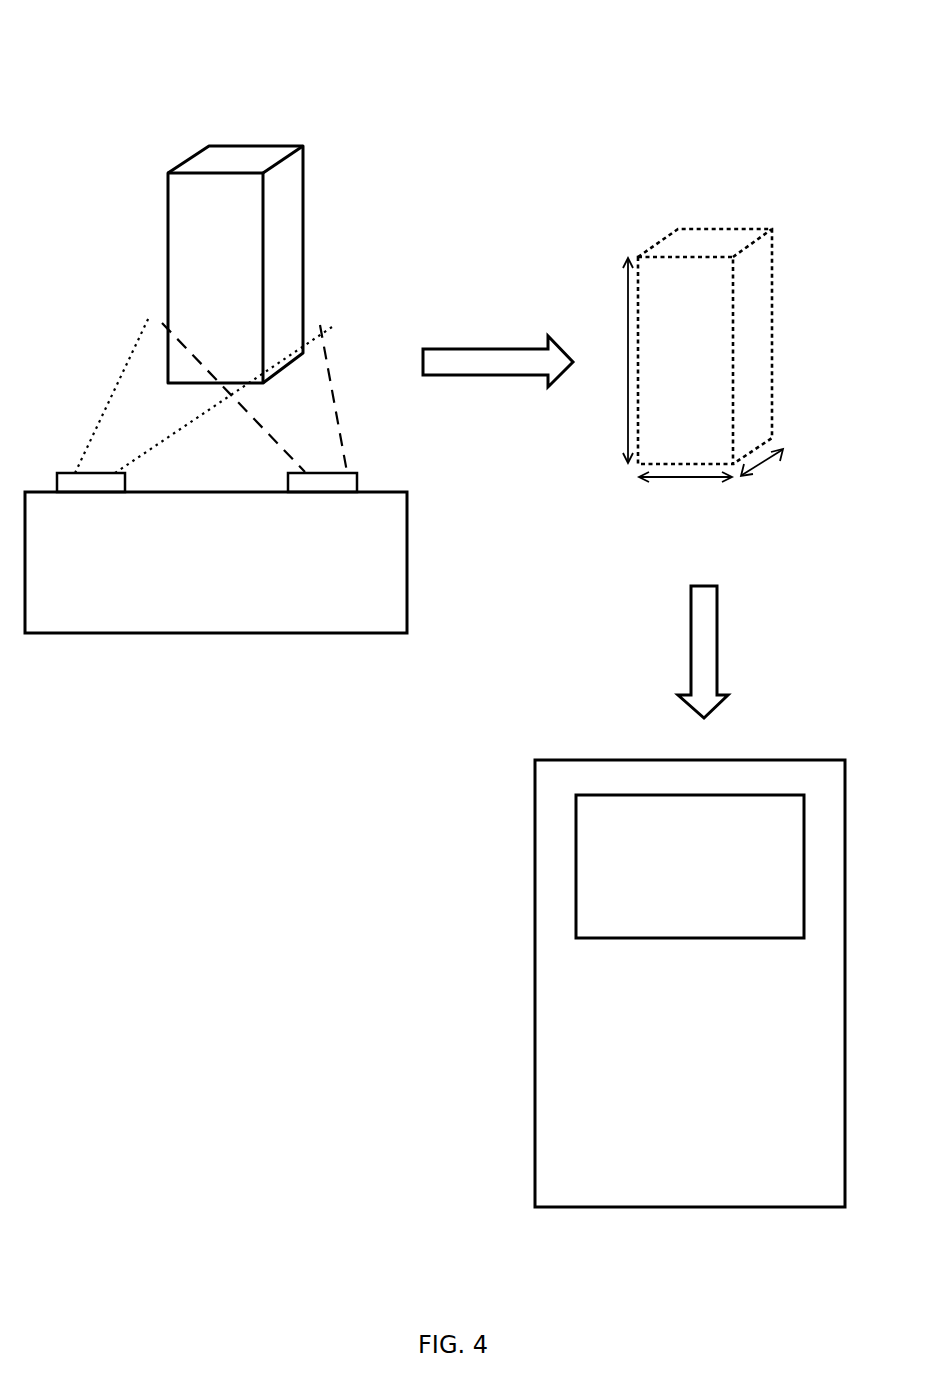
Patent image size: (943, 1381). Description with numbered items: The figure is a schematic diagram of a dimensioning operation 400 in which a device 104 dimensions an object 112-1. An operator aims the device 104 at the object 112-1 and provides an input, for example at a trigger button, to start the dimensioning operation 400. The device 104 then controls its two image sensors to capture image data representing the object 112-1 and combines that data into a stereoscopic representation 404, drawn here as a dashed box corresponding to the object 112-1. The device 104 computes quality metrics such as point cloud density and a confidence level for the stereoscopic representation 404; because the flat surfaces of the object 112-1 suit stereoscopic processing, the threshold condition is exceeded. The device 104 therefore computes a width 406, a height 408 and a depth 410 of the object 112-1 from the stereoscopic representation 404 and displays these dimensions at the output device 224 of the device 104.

The dimensioning operation 400 is at (150, 69).
The object 112-1 is at (303, 183).
The device 104 is at (533, 1073).
The stereoscopic representation 404 is at (703, 229).
The width 406 is at (685, 493).
The height 408 is at (605, 360).
The depth 410 is at (780, 467).
The output device 224 is at (575, 839).